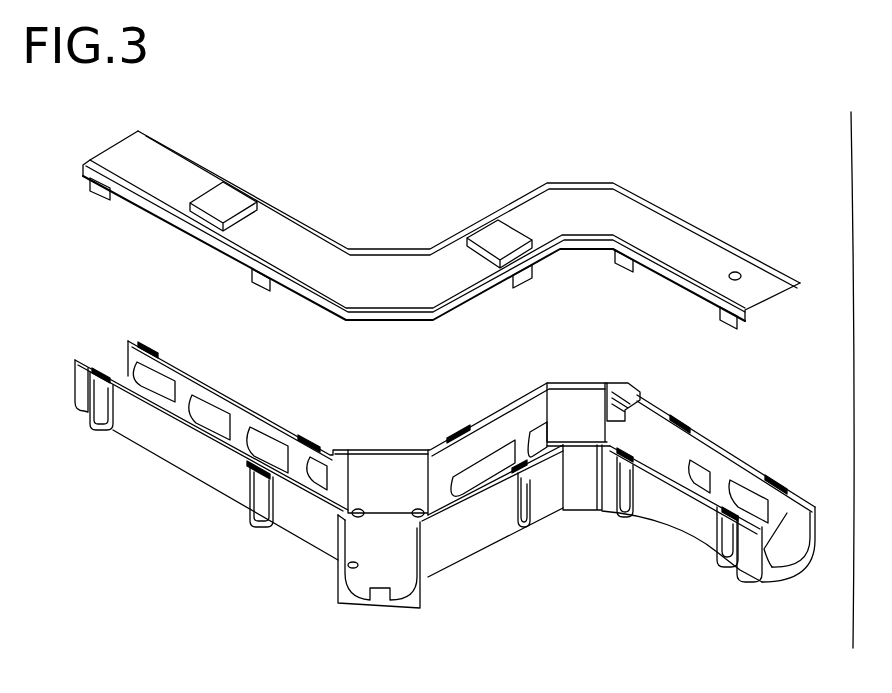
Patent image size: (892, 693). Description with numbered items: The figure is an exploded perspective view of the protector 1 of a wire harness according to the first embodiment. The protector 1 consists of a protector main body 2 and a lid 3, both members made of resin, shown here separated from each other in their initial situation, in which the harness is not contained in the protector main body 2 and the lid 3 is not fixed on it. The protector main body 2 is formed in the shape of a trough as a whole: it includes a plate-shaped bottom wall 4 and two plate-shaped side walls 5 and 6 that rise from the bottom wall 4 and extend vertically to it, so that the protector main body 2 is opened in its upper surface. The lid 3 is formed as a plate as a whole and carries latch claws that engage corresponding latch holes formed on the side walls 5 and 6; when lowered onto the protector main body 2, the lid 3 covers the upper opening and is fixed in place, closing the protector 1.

The protector 1 is at (734, 173).
The protector main body 2 is at (410, 450).
The lid 3 is at (287, 226).
The bottom wall 4 is at (792, 573).
The side wall 5 is at (178, 448).
The side wall 6 is at (517, 395).